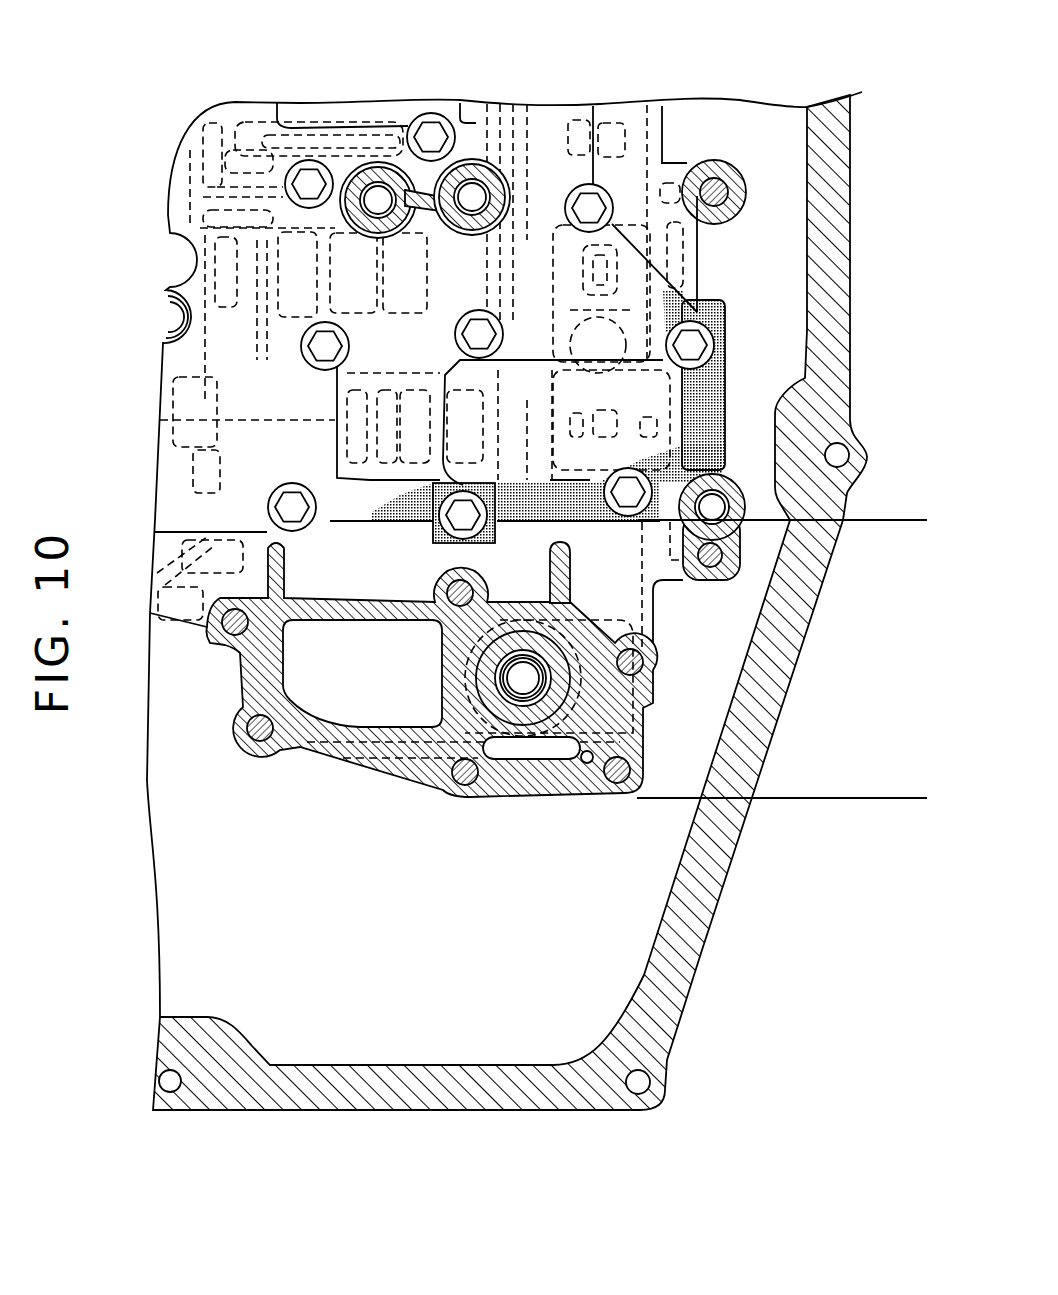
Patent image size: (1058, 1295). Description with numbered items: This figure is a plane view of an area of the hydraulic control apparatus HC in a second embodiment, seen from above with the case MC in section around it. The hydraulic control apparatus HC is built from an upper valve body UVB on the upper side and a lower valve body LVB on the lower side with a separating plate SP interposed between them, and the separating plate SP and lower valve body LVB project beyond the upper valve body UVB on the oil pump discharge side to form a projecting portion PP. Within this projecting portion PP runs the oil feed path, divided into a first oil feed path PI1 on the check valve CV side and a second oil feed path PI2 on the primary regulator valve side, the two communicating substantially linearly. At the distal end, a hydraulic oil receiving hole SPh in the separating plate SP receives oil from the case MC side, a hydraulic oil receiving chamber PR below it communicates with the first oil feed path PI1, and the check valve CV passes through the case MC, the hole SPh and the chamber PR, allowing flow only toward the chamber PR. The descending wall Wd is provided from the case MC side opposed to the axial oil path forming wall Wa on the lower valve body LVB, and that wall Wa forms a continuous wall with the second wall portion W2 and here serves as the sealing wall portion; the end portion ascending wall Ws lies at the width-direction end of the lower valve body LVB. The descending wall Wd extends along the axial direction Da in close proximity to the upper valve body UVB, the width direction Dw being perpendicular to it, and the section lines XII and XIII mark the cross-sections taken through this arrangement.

The hydraulic control apparatus HC is at (233, 217).
The case MC is at (384, 1113).
The lower valve body LVB is at (640, 157).
The separating plate SP is at (660, 262).
The upper valve body UVB is at (730, 397).
The second wall portion W2 is at (528, 373).
The axial oil path forming wall Wa is at (525, 590).
The descending wall Wd is at (570, 550).
The sealing wall portion Ws is at (650, 603).
The first oil feed path PI1 is at (362, 673).
The second oil feed path PI2 is at (384, 423).
The check valve CV is at (517, 718).
The hydraulic oil receiving chamber PR is at (470, 774).
The hydraulic oil receiving hole SPh is at (470, 691).
The axial direction Da is at (342, 1018).
The width direction Dw is at (362, 927).
The projecting portion PP is at (915, 522).
The XII-XII cross-section line XII is at (407, 590).
The XIII-XIII cross-section line XIII is at (843, 590).